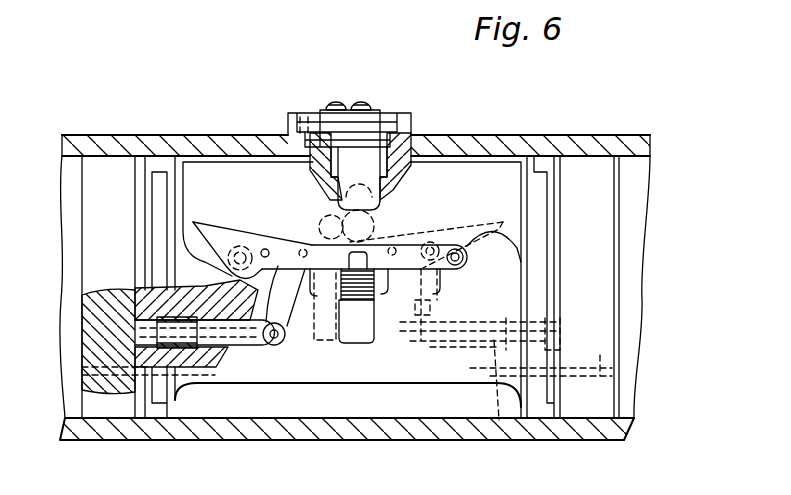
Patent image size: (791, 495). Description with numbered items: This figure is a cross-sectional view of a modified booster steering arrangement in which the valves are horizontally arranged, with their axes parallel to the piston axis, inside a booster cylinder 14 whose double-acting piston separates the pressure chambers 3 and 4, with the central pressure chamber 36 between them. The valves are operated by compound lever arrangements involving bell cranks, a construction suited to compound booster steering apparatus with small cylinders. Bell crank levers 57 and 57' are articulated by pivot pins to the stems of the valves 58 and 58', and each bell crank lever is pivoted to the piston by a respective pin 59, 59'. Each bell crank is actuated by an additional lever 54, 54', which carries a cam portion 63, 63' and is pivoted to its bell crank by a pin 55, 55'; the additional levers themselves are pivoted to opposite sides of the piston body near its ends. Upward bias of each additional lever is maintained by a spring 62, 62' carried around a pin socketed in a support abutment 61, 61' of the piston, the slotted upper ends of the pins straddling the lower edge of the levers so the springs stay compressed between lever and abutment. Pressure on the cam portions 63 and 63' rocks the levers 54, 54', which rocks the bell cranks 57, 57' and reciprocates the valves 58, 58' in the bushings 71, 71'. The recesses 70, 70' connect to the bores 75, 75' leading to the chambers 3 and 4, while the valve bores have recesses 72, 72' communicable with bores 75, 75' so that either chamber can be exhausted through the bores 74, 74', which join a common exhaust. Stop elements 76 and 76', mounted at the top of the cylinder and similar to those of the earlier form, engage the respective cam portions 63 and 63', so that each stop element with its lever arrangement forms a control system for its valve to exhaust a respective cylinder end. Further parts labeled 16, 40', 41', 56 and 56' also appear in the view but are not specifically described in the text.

The pressure chamber 3 is at (75, 164).
The pressure chamber 4 is at (629, 166).
The booster cylinder 14 is at (570, 140).
The housing body 16 is at (479, 358).
The central pressure chamber 36 is at (491, 163).
The adjusting screw 40' is at (360, 129).
The mounting flange 41' is at (349, 97).
The additional lever 54 is at (249, 211).
The additional lever 54' is at (455, 171).
The pin 55 is at (264, 217).
The pin 55' is at (442, 216).
The pivot bearing 56 is at (234, 182).
The pivot bearing (phantom) 56' is at (463, 180).
The bell crank lever 57 is at (293, 320).
The bell crank lever 57' is at (426, 342).
The valve 58 is at (207, 350).
The valve 58' is at (477, 271).
The pin 59 is at (284, 164).
The pin 59' is at (406, 222).
The support abutment 61 is at (361, 333).
The support abutment 61' is at (335, 344).
The spring 62 is at (391, 321).
The spring 62' is at (295, 280).
The cam portion 63 is at (227, 228).
The cam portion 63' is at (463, 222).
The recess 70 is at (177, 399).
The recess 70' is at (498, 328).
The bushing 71 is at (181, 414).
The bushing 71' is at (508, 350).
The recess 72 is at (196, 381).
The recess 72' is at (508, 410).
The bore 74 is at (152, 424).
The bore 74' is at (513, 317).
The bore 75 is at (105, 385).
The bore 75' is at (572, 392).
The stop element 76 is at (380, 79).
The stop element 76' is at (350, 79).